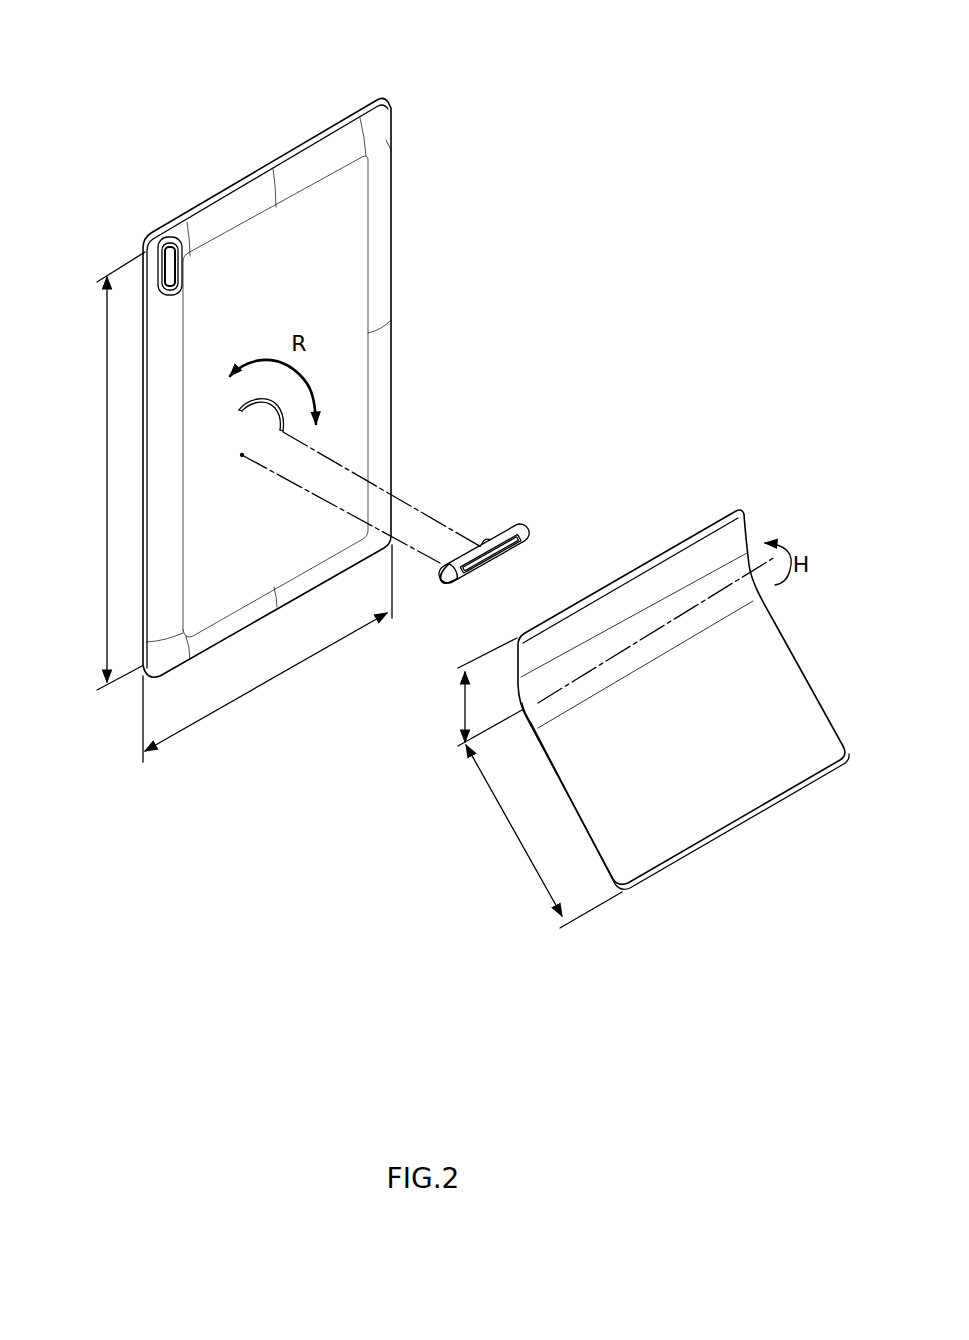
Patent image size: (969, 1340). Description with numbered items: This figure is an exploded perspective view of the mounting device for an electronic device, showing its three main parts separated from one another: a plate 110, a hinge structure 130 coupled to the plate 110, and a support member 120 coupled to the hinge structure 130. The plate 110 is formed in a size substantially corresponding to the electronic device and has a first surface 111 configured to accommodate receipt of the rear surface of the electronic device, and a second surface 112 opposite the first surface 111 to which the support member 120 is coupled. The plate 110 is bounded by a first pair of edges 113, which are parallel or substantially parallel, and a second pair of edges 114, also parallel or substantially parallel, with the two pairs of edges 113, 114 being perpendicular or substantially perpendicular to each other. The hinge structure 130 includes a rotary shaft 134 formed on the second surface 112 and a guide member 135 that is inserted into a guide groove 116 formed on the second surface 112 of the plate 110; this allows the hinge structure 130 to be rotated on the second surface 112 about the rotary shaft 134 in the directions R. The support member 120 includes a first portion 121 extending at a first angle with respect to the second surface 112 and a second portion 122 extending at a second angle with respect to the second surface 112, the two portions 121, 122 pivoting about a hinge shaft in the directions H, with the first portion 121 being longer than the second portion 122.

The plate 110 is at (386, 94).
The first surface 111 is at (287, 147).
The second surface 112 is at (350, 242).
The first pair of edges 113 is at (267, 653).
The second pair of edges 114 is at (102, 471).
The guide groove 116 is at (239, 409).
The support member 120 is at (745, 502).
The first portion 121 is at (544, 836).
The second portion 122 is at (469, 692).
The hinge structure 130 is at (526, 521).
The rotary shaft 134 is at (447, 583).
The guide member 135 is at (488, 541).